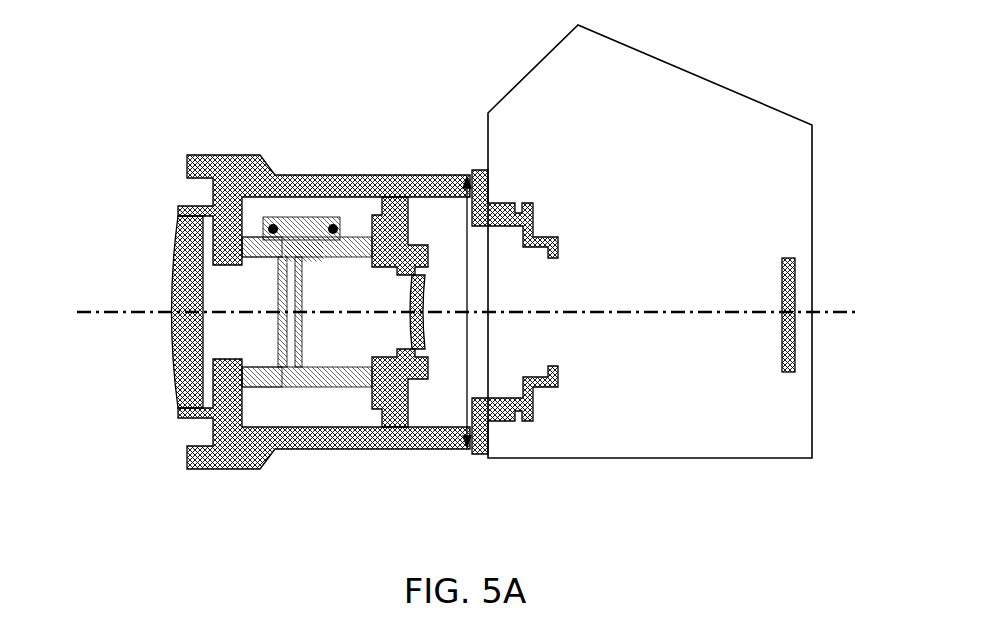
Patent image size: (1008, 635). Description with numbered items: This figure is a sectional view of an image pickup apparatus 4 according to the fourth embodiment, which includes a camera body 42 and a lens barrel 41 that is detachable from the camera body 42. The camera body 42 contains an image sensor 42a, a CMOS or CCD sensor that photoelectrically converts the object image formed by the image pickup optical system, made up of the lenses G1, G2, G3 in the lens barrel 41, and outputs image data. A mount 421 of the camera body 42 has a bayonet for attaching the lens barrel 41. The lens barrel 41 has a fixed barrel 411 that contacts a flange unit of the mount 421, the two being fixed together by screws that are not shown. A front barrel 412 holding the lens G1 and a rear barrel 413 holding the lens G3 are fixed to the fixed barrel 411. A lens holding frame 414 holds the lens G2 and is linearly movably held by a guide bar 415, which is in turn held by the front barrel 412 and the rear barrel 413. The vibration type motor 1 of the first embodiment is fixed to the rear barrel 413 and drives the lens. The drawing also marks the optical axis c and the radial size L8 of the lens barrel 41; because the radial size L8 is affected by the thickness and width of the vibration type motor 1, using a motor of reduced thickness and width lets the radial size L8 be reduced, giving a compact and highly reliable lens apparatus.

The image pickup apparatus 4 is at (147, 42).
The lens barrel 41 is at (309, 304).
The fixed barrel 411 is at (338, 180).
The front barrel 412 is at (223, 442).
The rear barrel 413 is at (407, 385).
The lens holding frame 414 is at (290, 347).
The guide bar 415 is at (272, 255).
The camera body 42 is at (743, 85).
The mount 421 is at (515, 212).
The image sensor 42a is at (792, 280).
The vibration type motor 1 is at (305, 200).
The lens G1 is at (183, 247).
The lens G2 is at (297, 287).
The lens G3 is at (423, 328).
The radial size L8 is at (485, 312).
The optical axis c is at (445, 314).